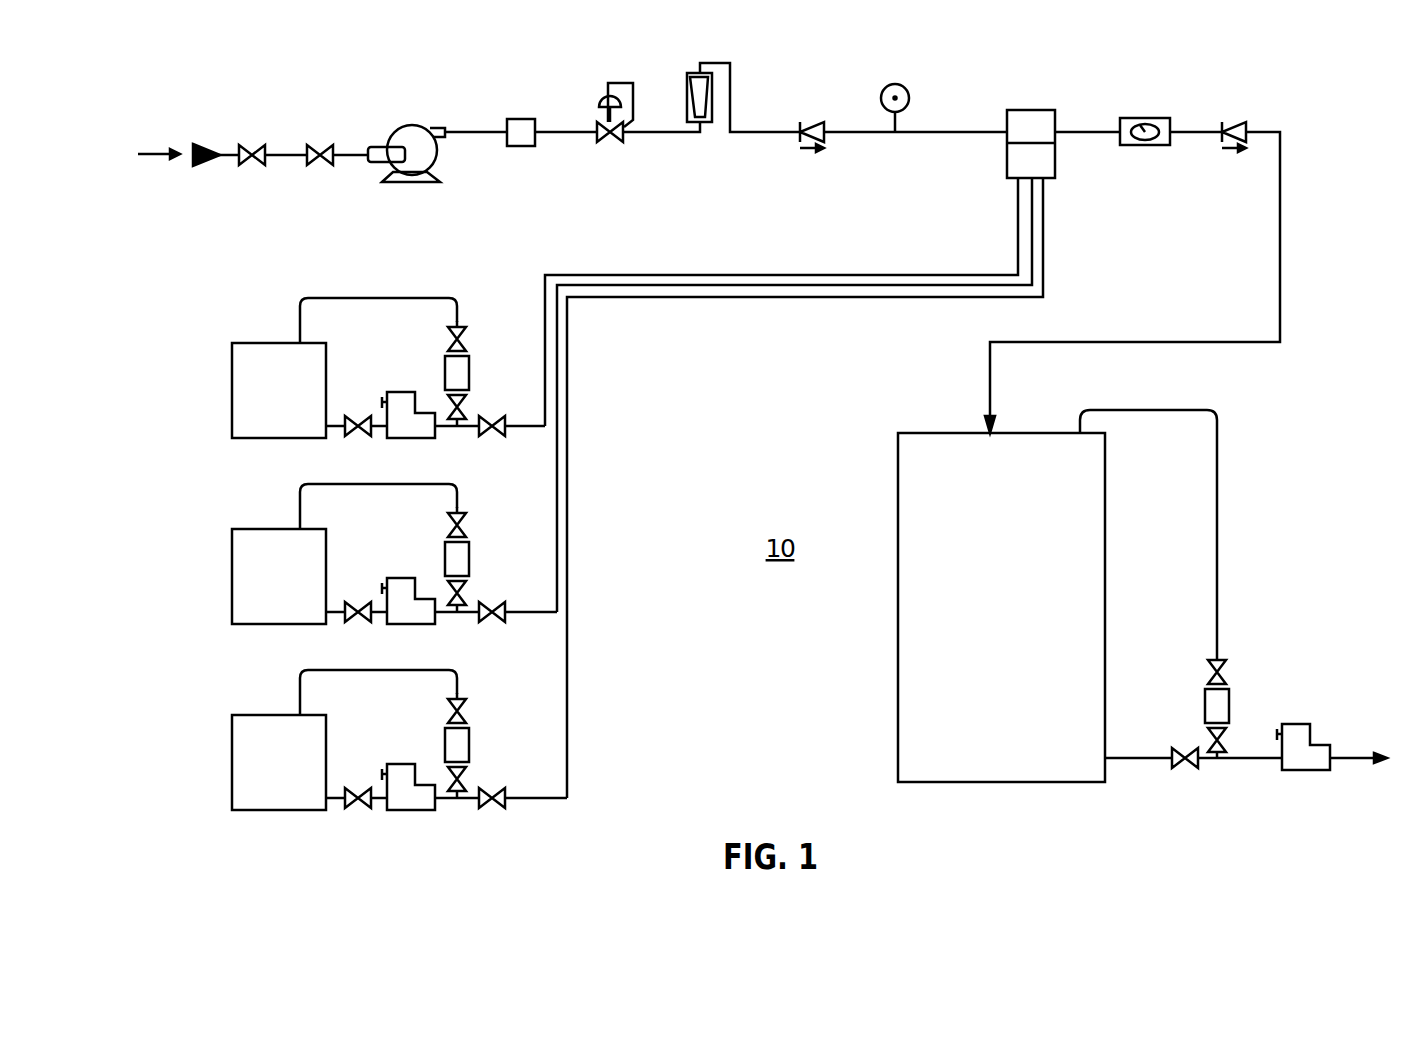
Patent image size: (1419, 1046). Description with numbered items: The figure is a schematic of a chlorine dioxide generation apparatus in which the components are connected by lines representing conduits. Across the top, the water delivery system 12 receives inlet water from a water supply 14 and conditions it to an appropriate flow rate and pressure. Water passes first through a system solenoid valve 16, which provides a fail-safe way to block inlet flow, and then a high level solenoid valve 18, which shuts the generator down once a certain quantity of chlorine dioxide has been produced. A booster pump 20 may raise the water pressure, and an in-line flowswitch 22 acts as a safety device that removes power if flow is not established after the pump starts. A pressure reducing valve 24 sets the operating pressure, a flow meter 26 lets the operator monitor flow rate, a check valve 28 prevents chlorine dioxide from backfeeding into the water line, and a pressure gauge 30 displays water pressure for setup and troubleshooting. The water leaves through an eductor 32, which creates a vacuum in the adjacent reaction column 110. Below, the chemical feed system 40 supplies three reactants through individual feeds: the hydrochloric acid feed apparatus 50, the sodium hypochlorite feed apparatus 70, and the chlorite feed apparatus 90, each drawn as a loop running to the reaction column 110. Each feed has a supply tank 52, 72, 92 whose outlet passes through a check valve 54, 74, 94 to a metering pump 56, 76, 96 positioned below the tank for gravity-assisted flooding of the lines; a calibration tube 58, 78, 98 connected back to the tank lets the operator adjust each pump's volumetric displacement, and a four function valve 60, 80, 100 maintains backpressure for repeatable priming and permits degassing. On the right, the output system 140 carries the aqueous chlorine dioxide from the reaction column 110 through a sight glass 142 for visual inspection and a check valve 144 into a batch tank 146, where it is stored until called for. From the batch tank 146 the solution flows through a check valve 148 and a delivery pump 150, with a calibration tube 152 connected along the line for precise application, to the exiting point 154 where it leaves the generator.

The water delivery system 12 is at (785, 62).
The water supply 14 is at (150, 157).
The system solenoid valve 16 is at (258, 148).
The high level solenoid valve 18 is at (322, 148).
The booster pump 20 is at (412, 136).
The in-line flowswitch 22 is at (520, 119).
The pressure reducing valve 24 is at (598, 92).
The flow meter 26 is at (692, 78).
The check valve 28 is at (808, 128).
The pressure gauge 30 is at (897, 84).
The eductor 32 is at (1022, 120).
The chemical feed system 40 is at (612, 347).
The hydrochloric acid feed apparatus 50 is at (343, 387).
The supply tank 52 is at (279, 390).
The check valve 54 is at (370, 438).
The pump 56 is at (400, 392).
The calibration tube 58 is at (480, 372).
The four function valve 60 is at (500, 438).
The sodium hypochlorite feed apparatus 70 is at (348, 573).
The supply tank 72 is at (279, 576).
The check valve 74 is at (370, 624).
The pump 76 is at (400, 578).
The calibration tube 78 is at (480, 558).
The four function valve 80 is at (500, 624).
The chlorite feed apparatus 90 is at (353, 759).
The supply tank 92 is at (279, 762).
The check valve 94 is at (370, 810).
The pump 96 is at (400, 764).
The calibration tube 98 is at (480, 744).
The four function valve 100 is at (500, 810).
The reaction column 110 is at (1000, 163).
The output system 140 is at (1092, 614).
The sight glass 142 is at (1140, 125).
The check valve 144 is at (1227, 127).
The batch tank 146 is at (1001, 607).
The check valve 148 is at (1190, 768).
The delivery pump 150 is at (1303, 732).
The calibration tube 152 is at (1221, 702).
The exiting point 154 is at (1352, 757).